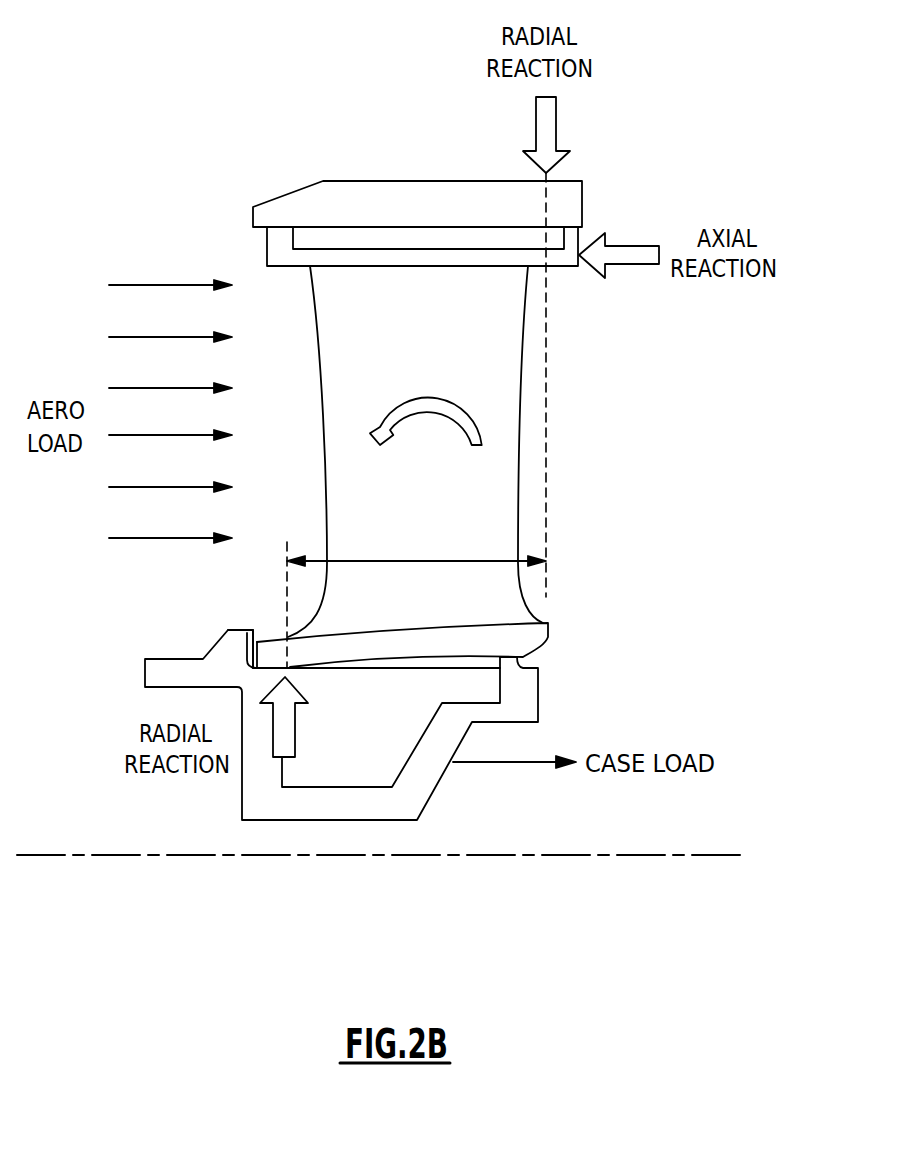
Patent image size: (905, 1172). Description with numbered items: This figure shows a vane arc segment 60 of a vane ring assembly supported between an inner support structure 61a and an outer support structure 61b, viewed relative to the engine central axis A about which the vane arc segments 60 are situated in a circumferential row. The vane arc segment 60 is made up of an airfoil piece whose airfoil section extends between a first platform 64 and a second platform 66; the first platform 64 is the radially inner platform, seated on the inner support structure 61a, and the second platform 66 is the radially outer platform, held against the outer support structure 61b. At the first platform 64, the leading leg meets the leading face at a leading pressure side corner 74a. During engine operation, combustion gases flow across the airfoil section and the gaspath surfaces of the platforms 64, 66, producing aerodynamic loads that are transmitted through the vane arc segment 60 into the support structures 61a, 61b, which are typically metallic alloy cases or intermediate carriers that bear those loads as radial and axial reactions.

The vane arc segment 60 is at (535, 404).
The inner support structure 61a is at (433, 795).
The outer support structure 61b is at (582, 204).
The first platform 64 is at (518, 638).
The second platform 66 is at (562, 267).
The leading pressure side corner 74a is at (260, 655).
The engine central axis A is at (127, 855).